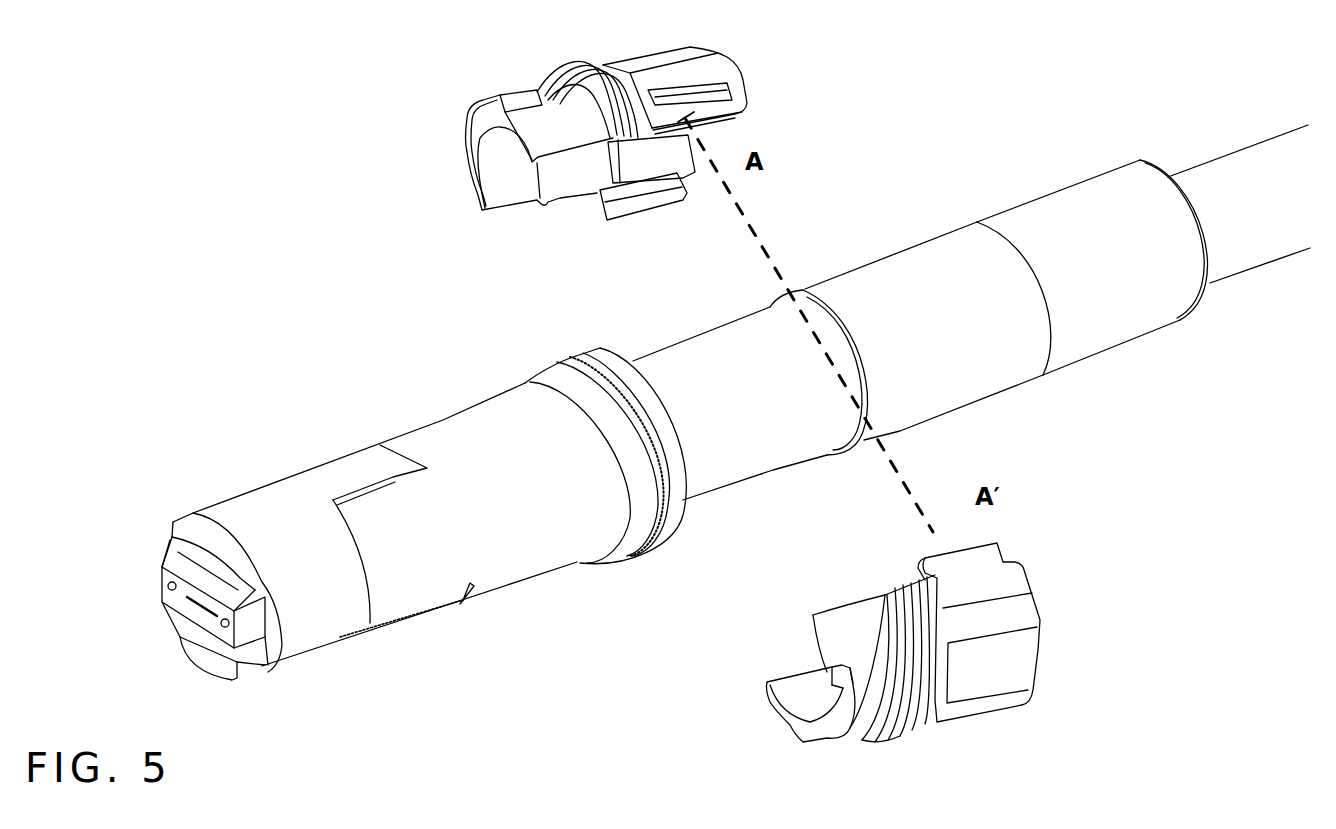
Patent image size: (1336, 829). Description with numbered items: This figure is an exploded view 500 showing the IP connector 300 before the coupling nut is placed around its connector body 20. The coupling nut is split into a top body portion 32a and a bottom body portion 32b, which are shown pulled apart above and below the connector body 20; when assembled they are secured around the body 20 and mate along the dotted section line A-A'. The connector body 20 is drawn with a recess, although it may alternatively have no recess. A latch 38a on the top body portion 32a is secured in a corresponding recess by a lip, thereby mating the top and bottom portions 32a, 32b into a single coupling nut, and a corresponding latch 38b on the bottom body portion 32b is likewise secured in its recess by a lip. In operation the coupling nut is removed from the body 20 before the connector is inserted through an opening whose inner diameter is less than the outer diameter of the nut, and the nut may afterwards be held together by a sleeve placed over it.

The optical fiber connector assembly 500 is at (92, 67).
The connector body 20 is at (690, 340).
The IP connector 300 is at (350, 408).
The top body portion 32a is at (435, 99).
The bottom body portion 32b is at (1070, 589).
The latch 38a is at (713, 91).
The latch 38b is at (902, 559).